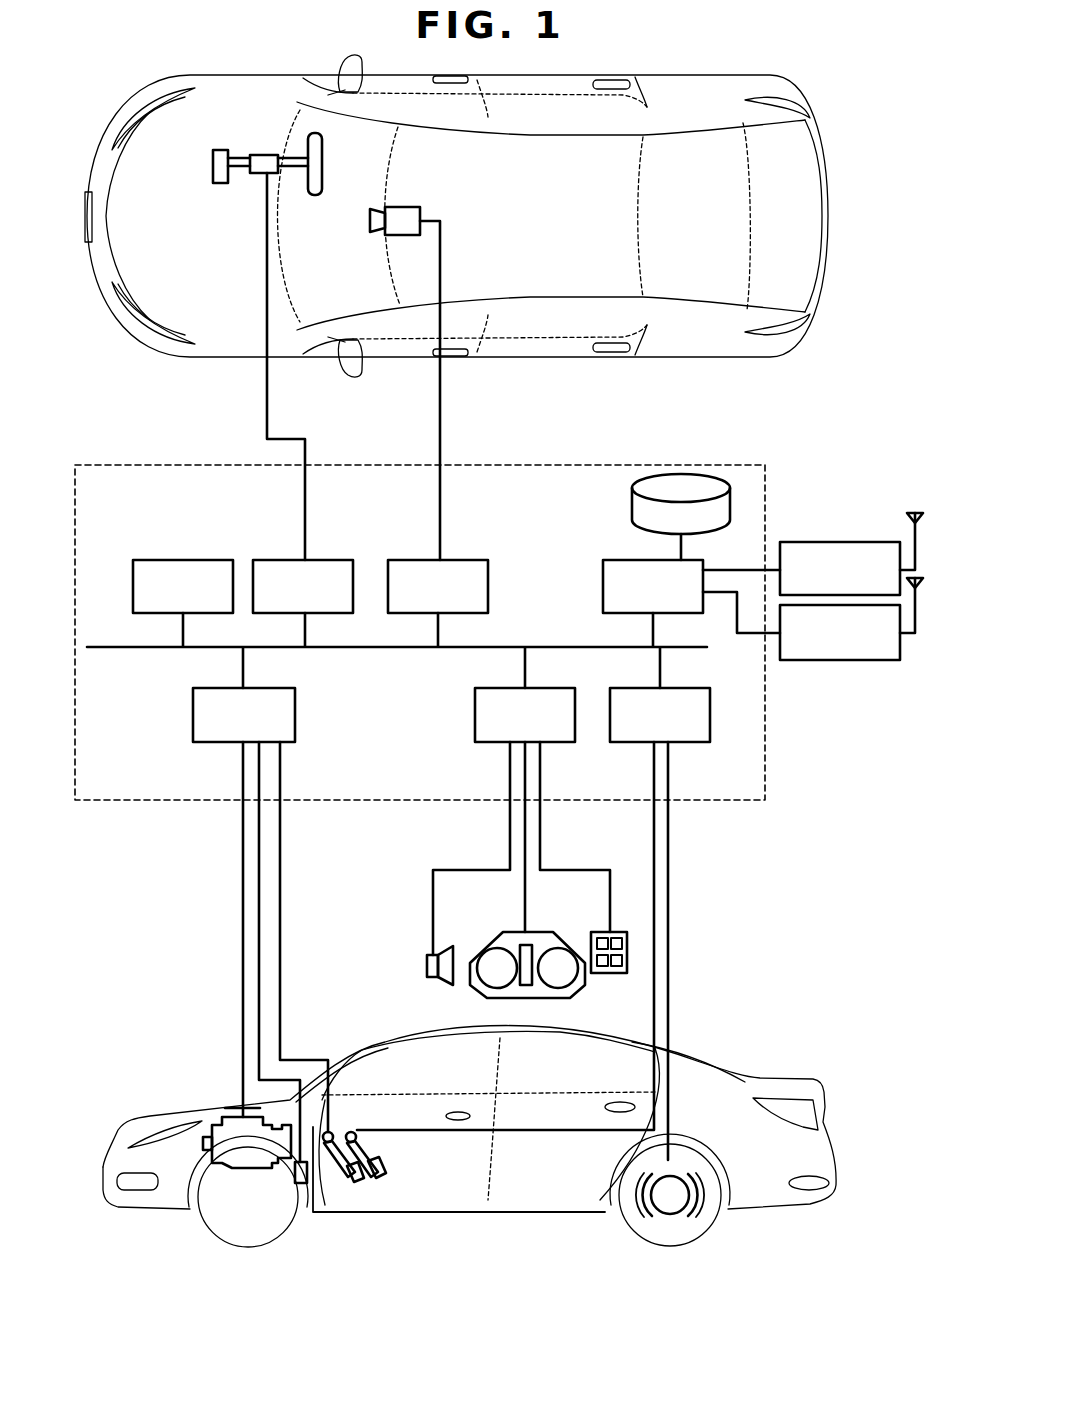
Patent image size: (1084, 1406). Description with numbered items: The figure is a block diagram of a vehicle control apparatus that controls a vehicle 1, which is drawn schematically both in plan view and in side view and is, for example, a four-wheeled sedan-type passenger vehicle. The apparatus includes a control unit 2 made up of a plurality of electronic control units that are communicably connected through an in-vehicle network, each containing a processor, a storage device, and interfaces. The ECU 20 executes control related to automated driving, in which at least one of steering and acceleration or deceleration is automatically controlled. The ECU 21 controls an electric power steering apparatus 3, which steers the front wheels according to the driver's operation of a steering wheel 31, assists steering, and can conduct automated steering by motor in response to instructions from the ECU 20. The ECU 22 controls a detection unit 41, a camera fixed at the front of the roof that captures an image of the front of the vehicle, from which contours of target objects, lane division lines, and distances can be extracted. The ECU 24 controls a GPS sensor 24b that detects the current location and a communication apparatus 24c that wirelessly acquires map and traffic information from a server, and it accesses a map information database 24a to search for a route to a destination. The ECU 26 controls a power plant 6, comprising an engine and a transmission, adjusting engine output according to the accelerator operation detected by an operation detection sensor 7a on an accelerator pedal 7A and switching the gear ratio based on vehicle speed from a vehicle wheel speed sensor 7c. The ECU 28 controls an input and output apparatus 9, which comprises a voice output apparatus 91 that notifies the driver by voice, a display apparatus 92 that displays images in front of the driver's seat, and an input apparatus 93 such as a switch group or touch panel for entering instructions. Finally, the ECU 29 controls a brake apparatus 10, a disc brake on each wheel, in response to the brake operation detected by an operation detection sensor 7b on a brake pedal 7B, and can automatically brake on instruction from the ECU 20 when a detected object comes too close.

The vehicle 1 is at (840, 132).
The control unit 2 is at (740, 803).
The electric power steering apparatus 3 is at (223, 185).
The steering wheel 31 is at (312, 198).
The detection unit 41 is at (408, 237).
The ECU 20 is at (215, 560).
The ECU 21 is at (335, 560).
The ECU 22 is at (418, 560).
The ECU 24 is at (605, 560).
The map information database 24a is at (681, 474).
The GPS sensor 24b is at (843, 542).
The communication apparatus 24c is at (830, 662).
The ECU 26 is at (228, 744).
The ECU 28 is at (560, 744).
The ECU 29 is at (693, 744).
The power plant 6 is at (213, 1118).
The operation detection sensor 7a is at (329, 1131).
The operation detection sensor 7b is at (355, 1133).
The accelerator pedal 7A is at (357, 1178).
The brake pedal 7B is at (380, 1160).
The vehicle wheel speed sensor 7c is at (303, 1184).
The input and output apparatus 9 is at (516, 971).
The voice output apparatus 91 is at (426, 962).
The display apparatus 92 is at (491, 946).
The input apparatus 93 is at (605, 973).
The brake apparatus 10 is at (675, 1228).